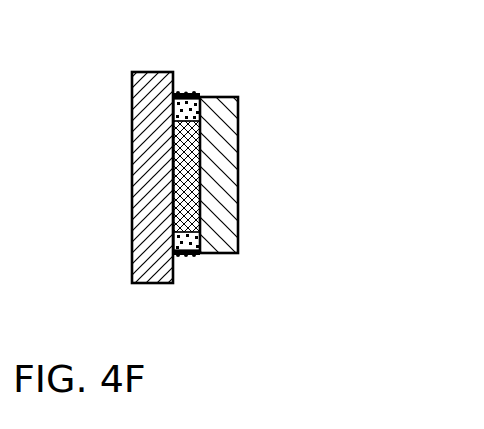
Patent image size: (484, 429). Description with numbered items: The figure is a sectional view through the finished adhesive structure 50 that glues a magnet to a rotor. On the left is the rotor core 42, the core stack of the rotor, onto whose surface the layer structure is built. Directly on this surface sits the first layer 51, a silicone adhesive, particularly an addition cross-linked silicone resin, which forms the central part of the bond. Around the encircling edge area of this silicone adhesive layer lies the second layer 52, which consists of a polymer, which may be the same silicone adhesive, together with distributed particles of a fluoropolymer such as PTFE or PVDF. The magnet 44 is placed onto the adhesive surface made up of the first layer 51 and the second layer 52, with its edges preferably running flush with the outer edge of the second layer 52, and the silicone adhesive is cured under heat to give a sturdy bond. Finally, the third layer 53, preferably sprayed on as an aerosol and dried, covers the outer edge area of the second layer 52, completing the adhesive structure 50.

The rotor core 42 is at (148, 207).
The magnet 44 is at (223, 219).
The adhesive structure 50 is at (275, 146).
The first layer 51 is at (192, 133).
The second layer 52 is at (193, 110).
The third layer 53 is at (312, 140).